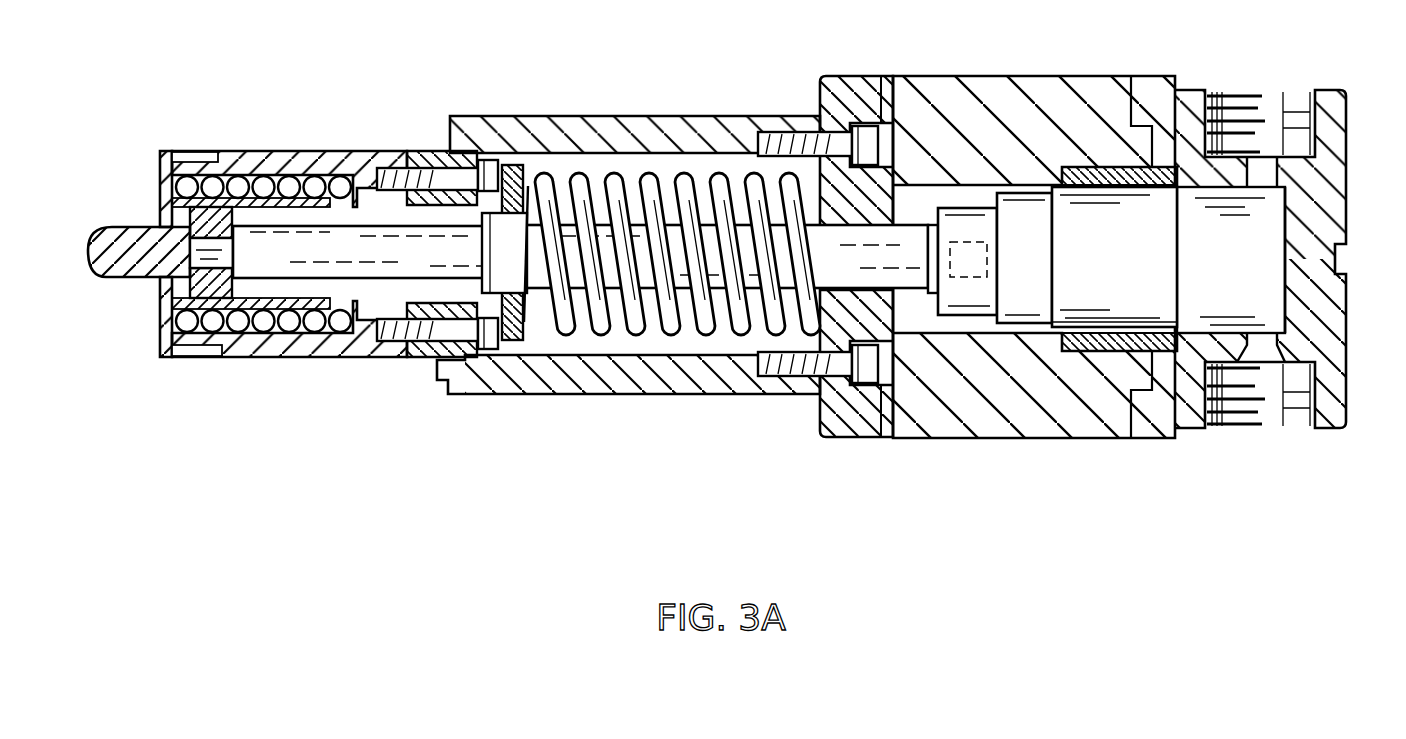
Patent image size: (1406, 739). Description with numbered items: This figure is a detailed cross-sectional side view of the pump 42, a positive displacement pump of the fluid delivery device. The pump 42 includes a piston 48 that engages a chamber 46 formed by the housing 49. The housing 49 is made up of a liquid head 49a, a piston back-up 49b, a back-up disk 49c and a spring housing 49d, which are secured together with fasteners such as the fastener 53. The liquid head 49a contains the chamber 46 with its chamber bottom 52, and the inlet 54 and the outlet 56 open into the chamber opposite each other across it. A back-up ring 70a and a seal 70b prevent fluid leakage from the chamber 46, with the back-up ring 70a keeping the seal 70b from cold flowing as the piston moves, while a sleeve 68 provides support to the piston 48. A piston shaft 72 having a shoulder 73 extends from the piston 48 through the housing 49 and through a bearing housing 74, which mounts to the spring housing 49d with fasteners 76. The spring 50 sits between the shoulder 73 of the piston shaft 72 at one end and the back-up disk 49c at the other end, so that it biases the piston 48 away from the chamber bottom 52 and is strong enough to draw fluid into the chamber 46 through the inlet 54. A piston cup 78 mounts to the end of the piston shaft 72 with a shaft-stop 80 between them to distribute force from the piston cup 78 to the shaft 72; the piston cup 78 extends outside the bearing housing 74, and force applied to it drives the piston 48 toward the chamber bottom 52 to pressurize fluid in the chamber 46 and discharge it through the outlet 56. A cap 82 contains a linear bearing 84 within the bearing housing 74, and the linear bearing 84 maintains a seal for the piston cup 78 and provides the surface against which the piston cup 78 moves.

The pump 42 is at (744, 269).
The chamber 46 is at (1270, 301).
The piston 48 is at (1083, 257).
The housing 49 is at (918, 273).
The liquid head 49a is at (1287, 270).
The piston back-up 49b is at (1010, 440).
The back-up disk 49c is at (827, 437).
The spring housing 49d is at (618, 395).
The spring 50 is at (643, 172).
The chamber bottom 52 is at (1278, 243).
The fastener 53 is at (862, 124).
The inlet 54 is at (1290, 98).
The outlet 56 is at (1292, 430).
The sleeve 68 is at (1118, 328).
The back-up ring 70a is at (1174, 168).
The seal 70b is at (1205, 31).
The piston shaft 72 is at (367, 270).
The shoulder 73 is at (513, 178).
The bearing housing 74 is at (296, 259).
The fasteners 76 is at (487, 168).
The piston cup 78 is at (131, 280).
The shaft-stop 80 is at (190, 218).
The cap 82 is at (203, 143).
The linear bearing 84 is at (290, 333).